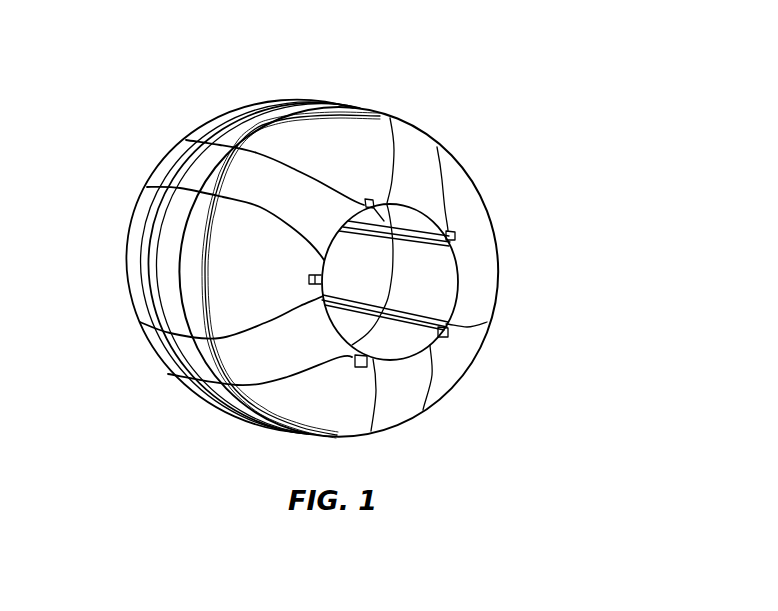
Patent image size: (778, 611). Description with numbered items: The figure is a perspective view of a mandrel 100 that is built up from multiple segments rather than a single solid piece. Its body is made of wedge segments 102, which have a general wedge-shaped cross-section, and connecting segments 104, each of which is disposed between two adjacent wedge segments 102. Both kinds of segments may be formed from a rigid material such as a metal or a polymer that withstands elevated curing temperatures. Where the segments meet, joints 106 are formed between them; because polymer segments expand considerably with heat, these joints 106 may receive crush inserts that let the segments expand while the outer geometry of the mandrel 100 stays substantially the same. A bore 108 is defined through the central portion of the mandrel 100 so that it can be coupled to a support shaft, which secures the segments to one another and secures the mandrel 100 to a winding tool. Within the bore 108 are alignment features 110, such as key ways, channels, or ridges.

The mandrel 100 is at (438, 88).
The wedge segments 102 is at (343, 140).
The connecting segments 104 is at (268, 185).
The joints 106 is at (305, 172).
The bore 108 is at (420, 293).
The alignment features 110 is at (456, 231).